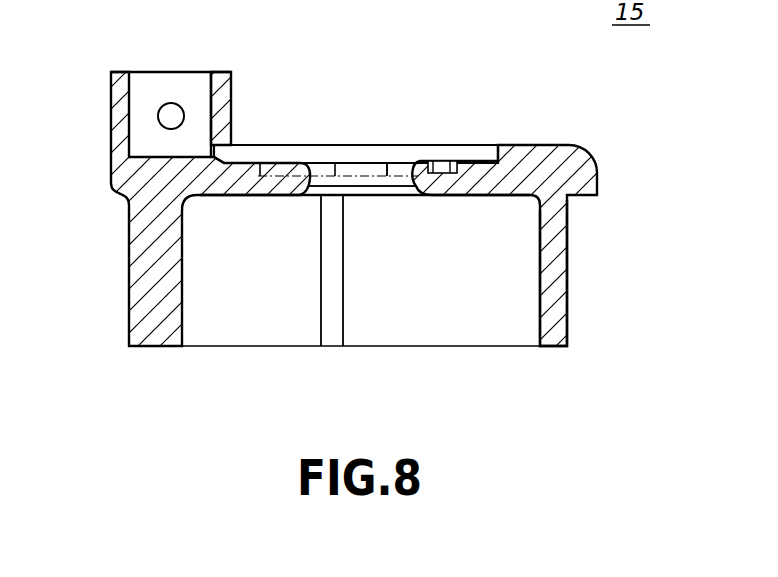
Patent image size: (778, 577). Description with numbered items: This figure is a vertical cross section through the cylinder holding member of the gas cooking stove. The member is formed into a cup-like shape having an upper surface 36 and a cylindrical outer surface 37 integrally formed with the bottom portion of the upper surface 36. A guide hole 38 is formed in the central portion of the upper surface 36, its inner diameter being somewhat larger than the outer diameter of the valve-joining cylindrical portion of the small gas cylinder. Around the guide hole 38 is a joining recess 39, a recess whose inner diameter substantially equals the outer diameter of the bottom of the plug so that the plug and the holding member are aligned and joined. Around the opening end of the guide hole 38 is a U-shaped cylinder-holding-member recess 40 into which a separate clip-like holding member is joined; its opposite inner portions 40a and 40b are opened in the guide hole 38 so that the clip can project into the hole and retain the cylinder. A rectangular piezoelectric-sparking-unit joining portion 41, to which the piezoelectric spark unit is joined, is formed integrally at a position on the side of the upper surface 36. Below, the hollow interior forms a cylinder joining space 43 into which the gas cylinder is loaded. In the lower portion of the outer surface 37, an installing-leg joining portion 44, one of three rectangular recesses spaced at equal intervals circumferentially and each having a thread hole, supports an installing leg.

The upper surface 36 is at (527, 144).
The outer surface 37 is at (129, 297).
The guide hole 38 is at (313, 160).
The joining recess 39 is at (484, 148).
The cylinder-holding-member recess 40 is at (440, 161).
The inner portion 40a is at (357, 166).
The inner portion 40b is at (362, 174).
The piezoelectric-sparking-unit joining portion 41 is at (141, 135).
The cylinder joining space 43 is at (474, 290).
The installing-leg joining portion 44 is at (568, 262).